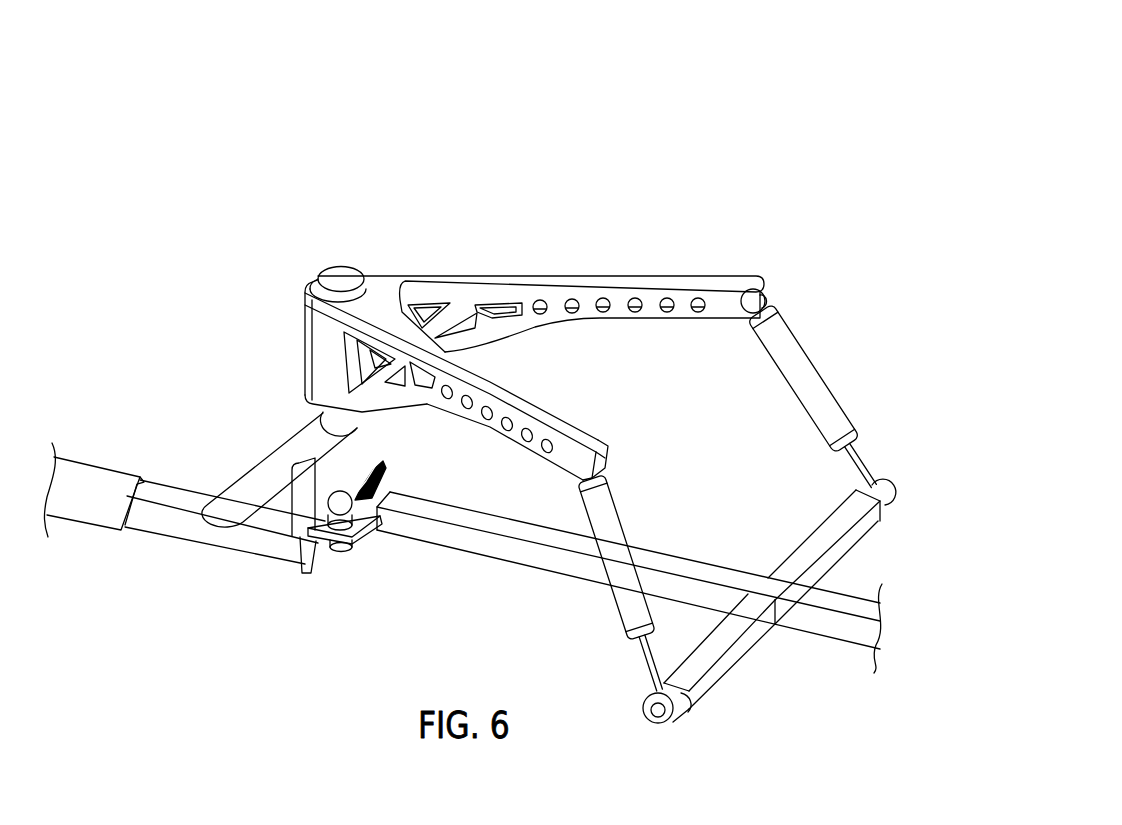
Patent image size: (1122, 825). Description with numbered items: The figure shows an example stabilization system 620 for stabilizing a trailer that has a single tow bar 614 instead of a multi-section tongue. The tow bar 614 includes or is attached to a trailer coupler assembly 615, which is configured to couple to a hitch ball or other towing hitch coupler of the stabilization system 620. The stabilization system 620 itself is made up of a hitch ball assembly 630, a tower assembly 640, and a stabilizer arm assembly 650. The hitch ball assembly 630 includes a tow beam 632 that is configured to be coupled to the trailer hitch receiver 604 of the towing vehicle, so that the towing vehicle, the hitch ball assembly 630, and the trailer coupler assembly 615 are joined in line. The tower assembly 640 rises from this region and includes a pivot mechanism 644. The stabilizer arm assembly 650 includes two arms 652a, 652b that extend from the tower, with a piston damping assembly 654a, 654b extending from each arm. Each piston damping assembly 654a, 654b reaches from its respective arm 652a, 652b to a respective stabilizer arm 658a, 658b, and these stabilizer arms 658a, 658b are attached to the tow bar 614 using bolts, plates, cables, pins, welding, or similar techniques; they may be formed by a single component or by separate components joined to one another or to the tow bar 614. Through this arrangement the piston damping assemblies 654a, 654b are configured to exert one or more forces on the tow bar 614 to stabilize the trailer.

The trailer hitch receiver 604 is at (101, 463).
The tow bar 614 is at (538, 573).
The trailer coupler assembly 615 is at (375, 552).
The stabilization system 620 is at (273, 140).
The hitch ball assembly 630 is at (208, 641).
The tow beam 632 is at (192, 543).
The tower assembly 640 is at (291, 396).
The pivot mechanism 644 is at (368, 293).
The stabilizer arm assembly 650 is at (812, 228).
The arm 652a is at (654, 272).
The arm 652b is at (540, 398).
The piston damping assembly 654a is at (818, 374).
The piston damping assembly 654b is at (632, 522).
The stabilizer arm 658a is at (873, 532).
The stabilizer arm 658b is at (750, 651).